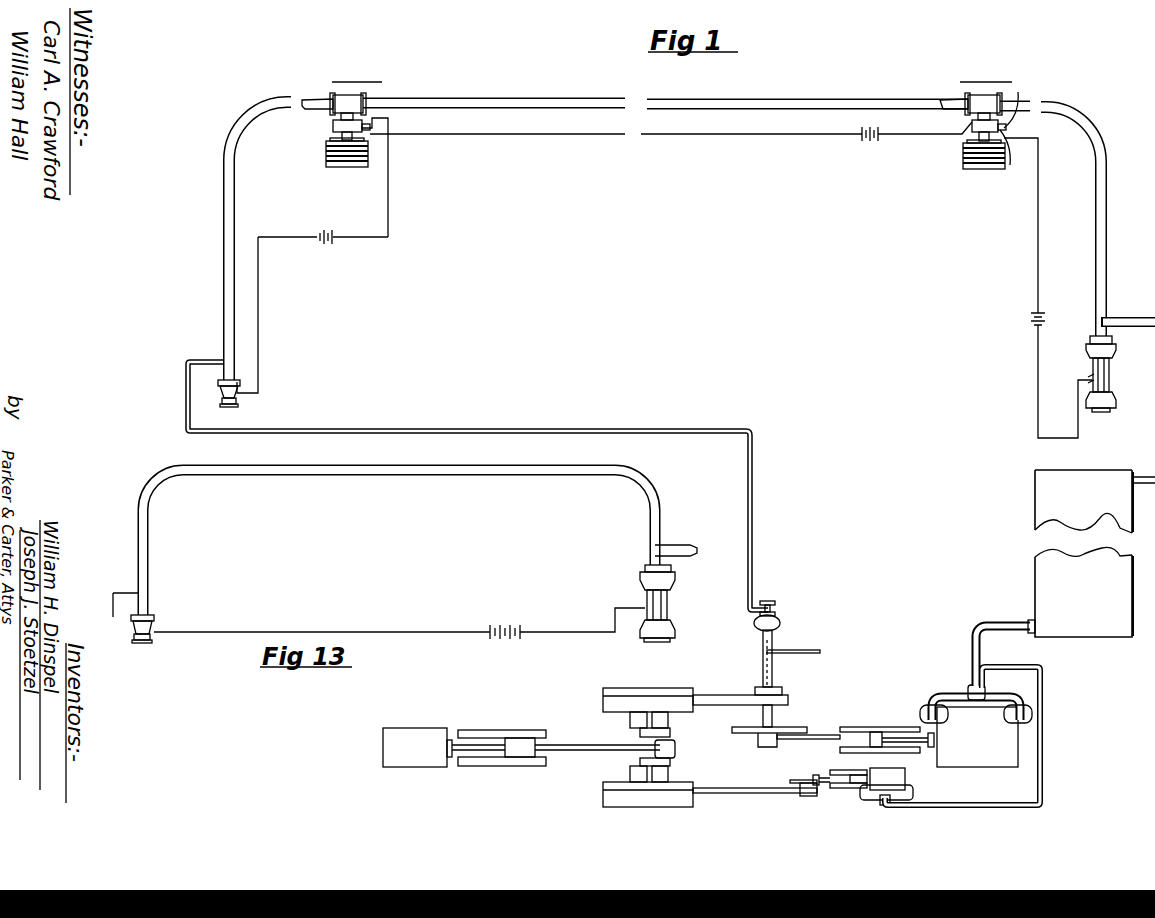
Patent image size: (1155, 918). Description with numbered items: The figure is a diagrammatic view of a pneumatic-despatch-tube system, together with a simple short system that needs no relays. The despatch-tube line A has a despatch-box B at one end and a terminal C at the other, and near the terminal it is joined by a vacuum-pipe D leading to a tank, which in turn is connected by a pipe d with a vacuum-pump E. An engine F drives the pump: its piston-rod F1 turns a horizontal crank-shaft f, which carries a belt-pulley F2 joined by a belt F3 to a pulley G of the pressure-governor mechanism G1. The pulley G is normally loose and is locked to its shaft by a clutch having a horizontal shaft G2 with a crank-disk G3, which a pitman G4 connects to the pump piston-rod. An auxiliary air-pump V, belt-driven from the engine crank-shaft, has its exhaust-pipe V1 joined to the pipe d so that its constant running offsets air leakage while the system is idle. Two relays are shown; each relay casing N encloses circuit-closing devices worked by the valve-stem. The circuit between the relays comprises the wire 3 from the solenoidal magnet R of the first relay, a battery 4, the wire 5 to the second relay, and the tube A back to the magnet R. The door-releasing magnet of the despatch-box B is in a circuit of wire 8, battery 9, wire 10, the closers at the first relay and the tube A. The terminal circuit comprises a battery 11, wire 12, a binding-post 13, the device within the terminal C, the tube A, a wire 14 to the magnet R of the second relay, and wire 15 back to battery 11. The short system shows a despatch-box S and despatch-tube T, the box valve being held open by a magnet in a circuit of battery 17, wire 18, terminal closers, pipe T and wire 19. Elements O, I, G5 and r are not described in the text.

In FIG. 1, the despatch-tube line A is at (545, 86).
In FIG. 1, the casing N is at (340, 94).
In FIG. 1, the electromagnet coil O is at (326, 155).
In FIG. 1, the wire 10 is at (388, 200).
In FIG. 1, the battery 9 is at (323, 248).
In FIG. 1, the wire 8 is at (258, 293).
In FIG. 1, the despatch-box B is at (236, 392).
In FIG. 1, the wire 3 is at (738, 134).
In FIG. 1, the battery 4 is at (870, 145).
In FIG. 1, the wire 5 is at (932, 135).
In FIG. 1, the wire 14 is at (1010, 158).
In FIG. 1, the solenoidal magnet R is at (1028, 100).
In FIG. 1, the wire 15 is at (1039, 195).
In FIG. 1, the battery 11 is at (1030, 320).
In FIG. 1, the wire 12 is at (1038, 360).
In FIG. 1, the binding-post 13 is at (1090, 375).
In FIG. 1, the terminal C is at (1114, 374).
In FIG. 1, the pipe I is at (642, 431).
In FIG. 1, the despatch-tube T is at (330, 470).
In FIG. 1, the vacuum-pipe D is at (682, 545).
In FIG. 1, the auxiliary air-pump V is at (670, 603).
In FIG. 13, the auxiliary air-pump V is at (884, 775).
In FIG. 1, the despatch-box S is at (140, 628).
In FIG. 1, the wire 19 is at (234, 631).
In FIG. 1, the battery 17 is at (511, 624).
In FIG. 1, the wire 18 is at (582, 619).
In FIG. 13, the engine F is at (440, 728).
In FIG. 13, the piston-rod F1 is at (588, 745).
In FIG. 13, the belt-pulley F2 is at (660, 688).
In FIG. 13, the crank-shaft f is at (668, 736).
In FIG. 13, the belt F3 is at (712, 695).
In FIG. 13, the pulley G is at (752, 705).
In FIG. 13, the pressure-governor mechanism G1 is at (793, 663).
In FIG. 13, the horizontal shaft G2 is at (772, 718).
In FIG. 13, the crank-disk G3 is at (740, 734).
In FIG. 13, the pitman G4 is at (793, 740).
In FIG. 13, the block G5 is at (782, 690).
In FIG. 13, the vacuum-pump E is at (936, 726).
In FIG. 13, the pipe d is at (1004, 593).
In FIG. 13, the lever r is at (766, 793).
In FIG. 13, the exhaust-pipe V1 is at (1025, 806).